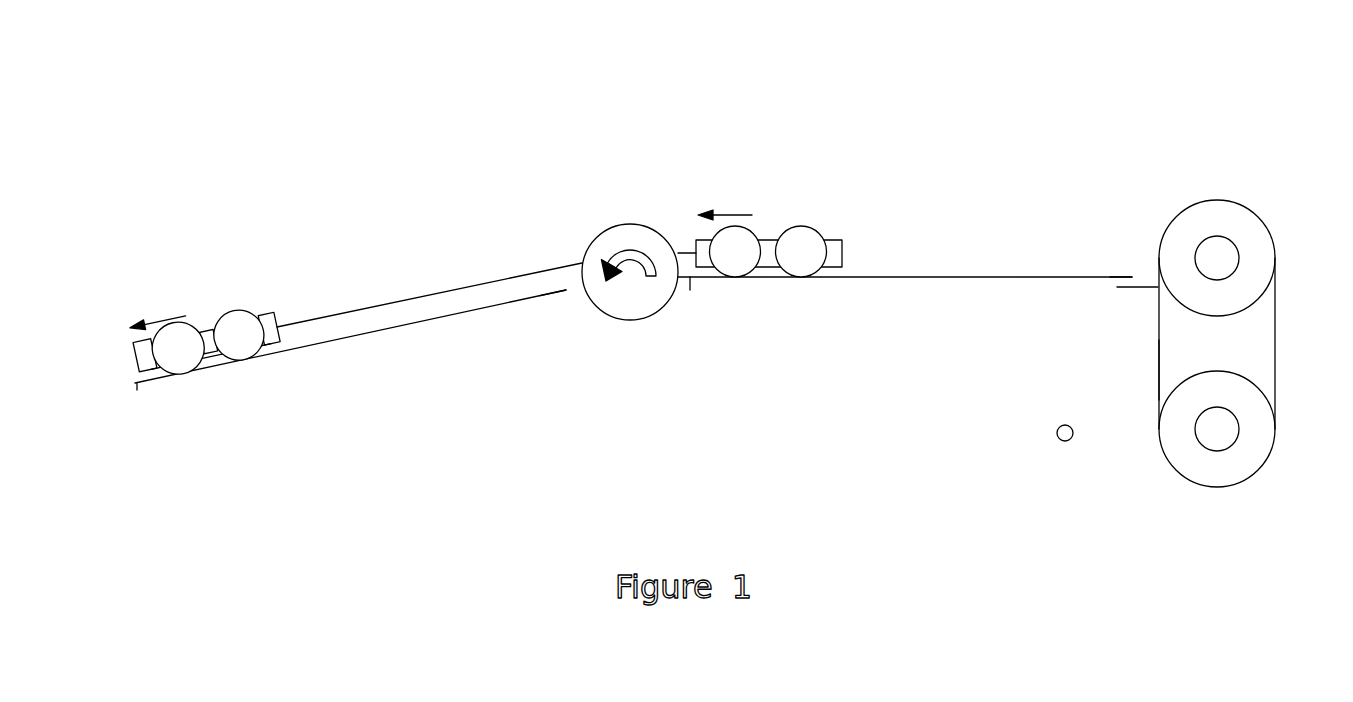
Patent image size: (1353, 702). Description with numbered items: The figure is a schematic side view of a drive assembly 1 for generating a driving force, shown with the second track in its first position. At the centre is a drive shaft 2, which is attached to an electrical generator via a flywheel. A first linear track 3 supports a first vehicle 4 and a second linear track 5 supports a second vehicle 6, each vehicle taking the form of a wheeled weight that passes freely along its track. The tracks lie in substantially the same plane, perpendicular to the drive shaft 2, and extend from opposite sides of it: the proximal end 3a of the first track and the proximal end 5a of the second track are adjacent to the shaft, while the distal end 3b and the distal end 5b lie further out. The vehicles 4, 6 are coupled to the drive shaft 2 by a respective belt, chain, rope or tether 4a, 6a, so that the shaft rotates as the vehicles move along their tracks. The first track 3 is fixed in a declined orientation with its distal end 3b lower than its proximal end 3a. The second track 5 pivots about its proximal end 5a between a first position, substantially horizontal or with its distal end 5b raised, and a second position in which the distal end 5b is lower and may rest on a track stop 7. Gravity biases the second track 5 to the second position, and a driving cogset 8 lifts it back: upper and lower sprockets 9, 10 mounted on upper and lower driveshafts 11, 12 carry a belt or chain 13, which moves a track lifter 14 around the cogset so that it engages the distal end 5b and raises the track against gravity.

The drive assembly 1 is at (888, 30).
The drive shaft 2 is at (630, 223).
The first linear track 3 is at (362, 344).
The proximal end of the first track 3a is at (566, 290).
The distal end of the first track 3b is at (137, 384).
The first vehicle 4 is at (133, 357).
The belt, chain, rope or tether 4a is at (412, 298).
The second linear track 5 is at (910, 242).
The proximal end of the second track 5a is at (690, 290).
The distal end of the second track 5b is at (1137, 277).
The second vehicle 6 is at (795, 204).
The belt, chain, rope or tether 6a is at (687, 240).
The track stop 7 is at (1065, 443).
The driving cogset 8 is at (1195, 348).
The upper sprocket 9 is at (1227, 488).
The lower sprocket 10 is at (1190, 203).
The upper driveshaft 11 is at (1198, 443).
The lower driveshaft 12 is at (1223, 237).
The belt or chain 13 is at (1159, 370).
The track lifter 14 is at (1117, 287).